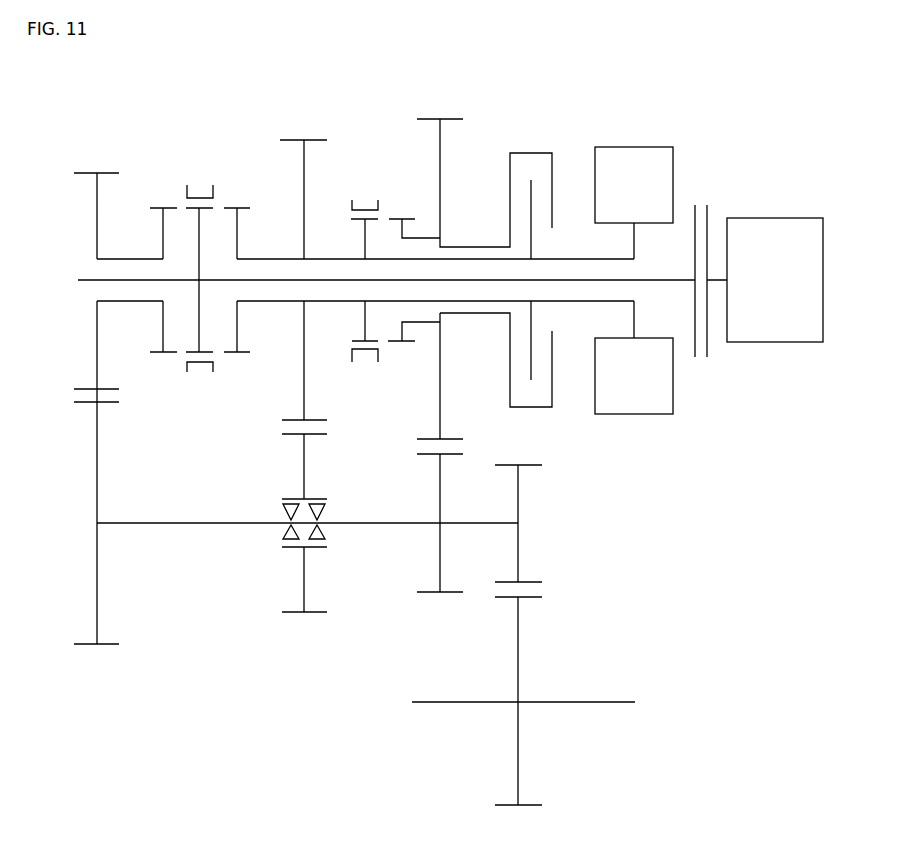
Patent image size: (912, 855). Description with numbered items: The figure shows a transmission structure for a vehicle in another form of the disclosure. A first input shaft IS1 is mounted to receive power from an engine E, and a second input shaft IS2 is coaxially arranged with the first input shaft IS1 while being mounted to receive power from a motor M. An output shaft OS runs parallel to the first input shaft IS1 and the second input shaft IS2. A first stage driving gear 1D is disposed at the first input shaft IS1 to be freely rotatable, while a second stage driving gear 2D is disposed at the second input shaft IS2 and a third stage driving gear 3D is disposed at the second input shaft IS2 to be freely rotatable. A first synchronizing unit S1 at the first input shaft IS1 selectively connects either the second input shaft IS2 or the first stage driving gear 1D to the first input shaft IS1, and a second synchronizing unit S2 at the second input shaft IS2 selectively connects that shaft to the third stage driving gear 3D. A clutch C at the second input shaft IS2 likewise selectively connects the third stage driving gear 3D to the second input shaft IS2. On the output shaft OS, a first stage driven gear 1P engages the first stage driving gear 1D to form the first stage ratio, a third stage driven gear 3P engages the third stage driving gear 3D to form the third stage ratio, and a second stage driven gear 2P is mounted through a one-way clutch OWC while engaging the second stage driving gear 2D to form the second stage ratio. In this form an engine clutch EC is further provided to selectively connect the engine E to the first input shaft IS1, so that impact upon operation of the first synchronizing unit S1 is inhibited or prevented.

The first stage driving gear 1D is at (125, 249).
The second stage driving gear 2D is at (303, 268).
The third stage driving gear 3D is at (484, 267).
The first stage driven gear 1P is at (96, 486).
The second stage driven gear 2P is at (304, 626).
The third stage driven gear 3P is at (440, 529).
The first synchronizing unit S1 is at (193, 186).
The second synchronizing unit S2 is at (365, 200).
The first input shaft IS1 is at (90, 280).
The second input shaft IS2 is at (282, 259).
The output shaft OS is at (175, 523).
The one-way clutch OWC is at (282, 540).
The clutch C is at (531, 153).
The engine clutch EC is at (712, 207).
The motor M is at (634, 280).
The engine E is at (775, 280).